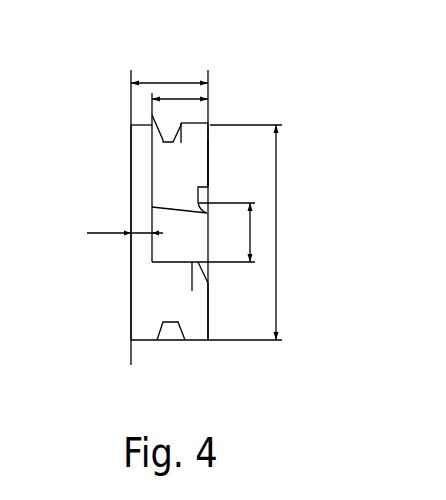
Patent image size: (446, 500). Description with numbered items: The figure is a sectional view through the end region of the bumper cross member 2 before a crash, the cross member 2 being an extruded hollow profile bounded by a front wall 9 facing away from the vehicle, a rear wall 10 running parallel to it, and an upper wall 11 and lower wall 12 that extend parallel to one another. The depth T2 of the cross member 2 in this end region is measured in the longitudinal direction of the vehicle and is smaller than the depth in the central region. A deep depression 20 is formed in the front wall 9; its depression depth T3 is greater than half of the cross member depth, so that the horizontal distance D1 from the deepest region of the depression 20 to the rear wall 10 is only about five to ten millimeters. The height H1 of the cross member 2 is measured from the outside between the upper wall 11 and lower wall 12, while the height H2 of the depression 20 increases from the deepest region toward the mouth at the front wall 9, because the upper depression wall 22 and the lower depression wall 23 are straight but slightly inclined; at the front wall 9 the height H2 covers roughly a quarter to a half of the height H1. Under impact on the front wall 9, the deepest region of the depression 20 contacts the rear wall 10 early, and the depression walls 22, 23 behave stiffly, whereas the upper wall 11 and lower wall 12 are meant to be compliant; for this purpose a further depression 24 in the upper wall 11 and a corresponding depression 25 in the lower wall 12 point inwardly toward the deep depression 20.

The cross member 2 is at (126, 161).
The front wall 9 is at (210, 161).
The rear wall 10 is at (131, 302).
The upper wall 11 is at (200, 122).
The lower wall 12 is at (146, 341).
The depression 20 is at (180, 237).
The upper depression wall 22 is at (210, 211).
The lower depression wall 23 is at (192, 291).
The further depression 24 is at (152, 115).
The corresponding depression 25 is at (170, 323).
The depth of the cross member T2 is at (160, 80).
The depression depth T3 is at (182, 96).
The horizontal distance D1 is at (131, 222).
The height of the cross member H1 is at (276, 243).
The height of the depression H2 is at (226, 232).